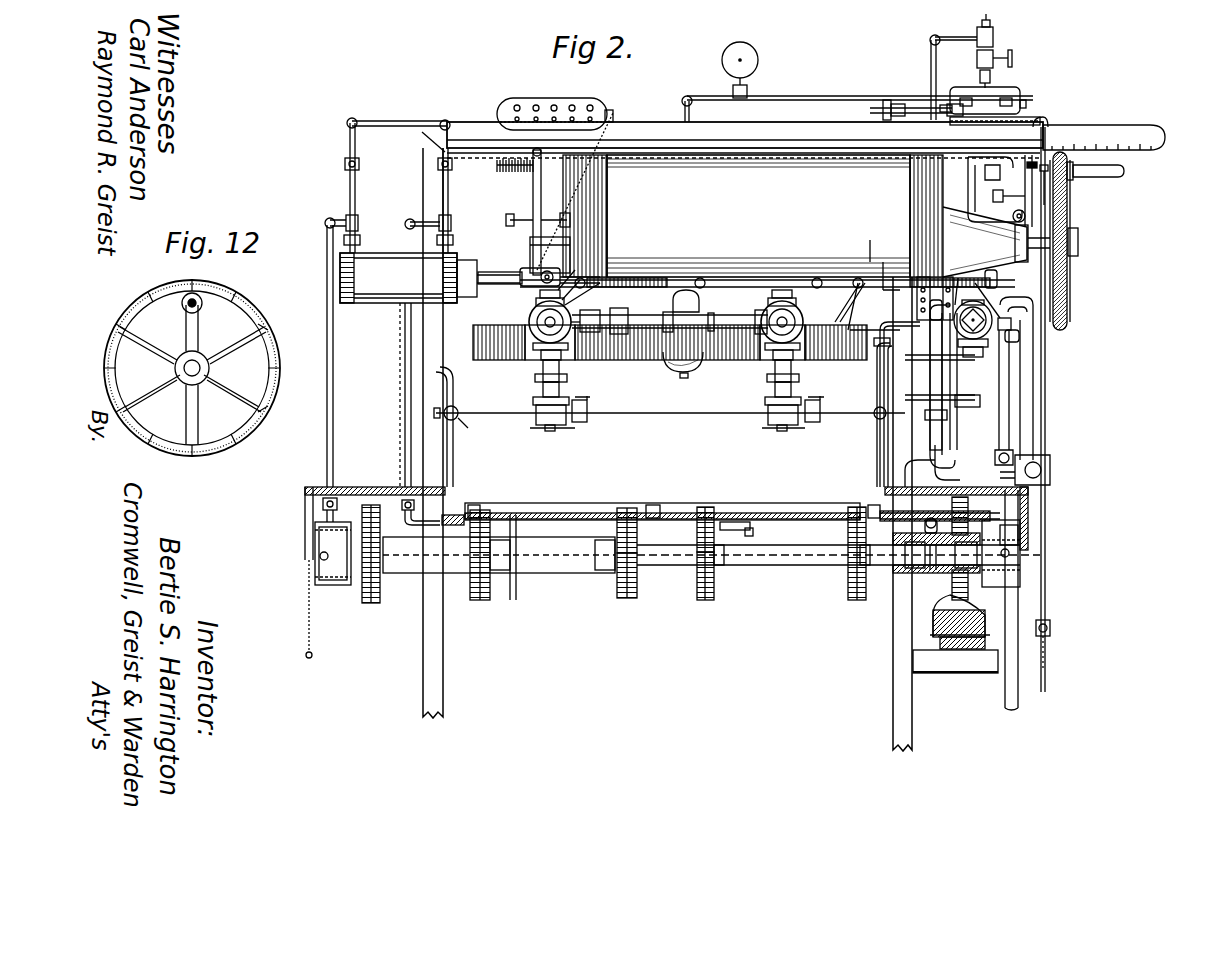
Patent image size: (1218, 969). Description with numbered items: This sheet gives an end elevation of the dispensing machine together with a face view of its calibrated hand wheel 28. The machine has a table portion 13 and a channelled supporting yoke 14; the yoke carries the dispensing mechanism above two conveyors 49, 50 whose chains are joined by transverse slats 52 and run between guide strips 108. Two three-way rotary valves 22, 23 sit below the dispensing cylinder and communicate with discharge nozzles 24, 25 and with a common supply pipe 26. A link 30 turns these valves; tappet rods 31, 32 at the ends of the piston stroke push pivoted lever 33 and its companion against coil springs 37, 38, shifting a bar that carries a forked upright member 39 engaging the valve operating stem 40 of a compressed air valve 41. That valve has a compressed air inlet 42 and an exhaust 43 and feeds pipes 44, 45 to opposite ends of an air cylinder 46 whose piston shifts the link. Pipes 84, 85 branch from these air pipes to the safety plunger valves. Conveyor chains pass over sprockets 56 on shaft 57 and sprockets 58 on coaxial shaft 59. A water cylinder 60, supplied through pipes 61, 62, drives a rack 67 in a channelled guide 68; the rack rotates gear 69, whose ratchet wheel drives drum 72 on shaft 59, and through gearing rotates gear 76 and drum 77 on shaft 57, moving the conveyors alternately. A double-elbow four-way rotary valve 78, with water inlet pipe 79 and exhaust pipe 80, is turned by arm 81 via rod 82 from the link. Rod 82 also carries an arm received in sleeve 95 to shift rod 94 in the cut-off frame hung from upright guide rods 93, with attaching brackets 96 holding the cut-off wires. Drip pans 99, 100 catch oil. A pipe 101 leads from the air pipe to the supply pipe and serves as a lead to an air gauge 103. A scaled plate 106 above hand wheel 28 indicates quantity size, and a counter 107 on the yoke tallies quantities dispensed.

In FIG. 2, the table portion 13 is at (530, 503).
In FIG. 2, the channelled supporting yoke 14 is at (647, 132).
In FIG. 2, the three-way rotary valve 22 is at (528, 315).
In FIG. 2, the three-way rotary valve 23 is at (803, 323).
In FIG. 2, the discharge nozzle 24 is at (533, 388).
In FIG. 2, the discharge nozzle 25 is at (768, 390).
In FIG. 2, the common supply pipe 26 is at (700, 355).
In FIG. 12, the hand wheel 28 is at (278, 378).
In FIG. 2, the hand wheel 28 is at (1060, 205).
In FIG. 2, the link 30 is at (612, 290).
In FIG. 2, the tappet rod 31 is at (538, 205).
In FIG. 2, the tappet rod 32 is at (1040, 205).
In FIG. 2, the pivoted lever 33 is at (532, 188).
In FIG. 2, the coil spring 37 is at (515, 172).
In FIG. 2, the coil spring 38 is at (1040, 165).
In FIG. 2, the forked upright member 39 is at (887, 100).
In FIG. 2, the valve operating stem 40 is at (930, 110).
In FIG. 2, the compressed air valve 41 is at (1010, 95).
In FIG. 2, the compressed air inlet 42 is at (994, 27).
In FIG. 2, the exhaust 43 is at (1038, 115).
In FIG. 2, the pipe 44 is at (357, 178).
In FIG. 2, the pipe 45 is at (443, 182).
In FIG. 2, the air cylinder 46 is at (375, 253).
In FIG. 2, the conveyor 49 is at (625, 507).
In FIG. 2, the conveyor 50 is at (705, 507).
In FIG. 2, the transverse slat 52 is at (575, 510).
In FIG. 2, the sprocket 56 is at (490, 600).
In FIG. 2, the transverse shaft 57 is at (525, 565).
In FIG. 2, the sprocket 58 is at (718, 600).
In FIG. 2, the transverse shaft 59 is at (775, 570).
In FIG. 2, the water cylinder 60 is at (985, 605).
In FIG. 2, the pipe 61 is at (1035, 352).
In FIG. 2, the pipe 62 is at (905, 385).
In FIG. 2, the rack 67 is at (985, 615).
In FIG. 2, the channelled guide 68 is at (940, 640).
In FIG. 2, the gear 69 is at (950, 516).
In FIG. 2, the ratchet-carrying drum 72 is at (1018, 530).
In FIG. 2, the gear 76 is at (371, 603).
In FIG. 2, the ratchet carrying drum 77 is at (340, 590).
In FIG. 2, the double-elbow four-way rotary valve 78 is at (1040, 335).
In FIG. 2, the water inlet pipe 79 is at (1010, 380).
In FIG. 2, the exhaust pipe 80 is at (975, 385).
In FIG. 2, the arm 81 is at (560, 280).
In FIG. 2, the rod 82 is at (880, 278).
In FIG. 2, the pipe 84 is at (325, 240).
In FIG. 2, the pipe 85 is at (415, 236).
In FIG. 2, the upright guide rod 93 is at (452, 452).
In FIG. 2, the rod 94 is at (713, 418).
In FIG. 2, the sleeve 95 is at (940, 420).
In FIG. 2, the attaching bracket 96 is at (580, 425).
In FIG. 2, the drip pan 99 is at (628, 362).
In FIG. 2, the drip pan 100 is at (957, 672).
In FIG. 2, the pipe 101 is at (800, 97).
In FIG. 2, the air gauge 103 is at (760, 55).
In FIG. 2, the scaled plate 106 is at (1122, 130).
In FIG. 2, the counter 107 is at (546, 97).
In FIG. 2, the guide strip 108 is at (465, 505).